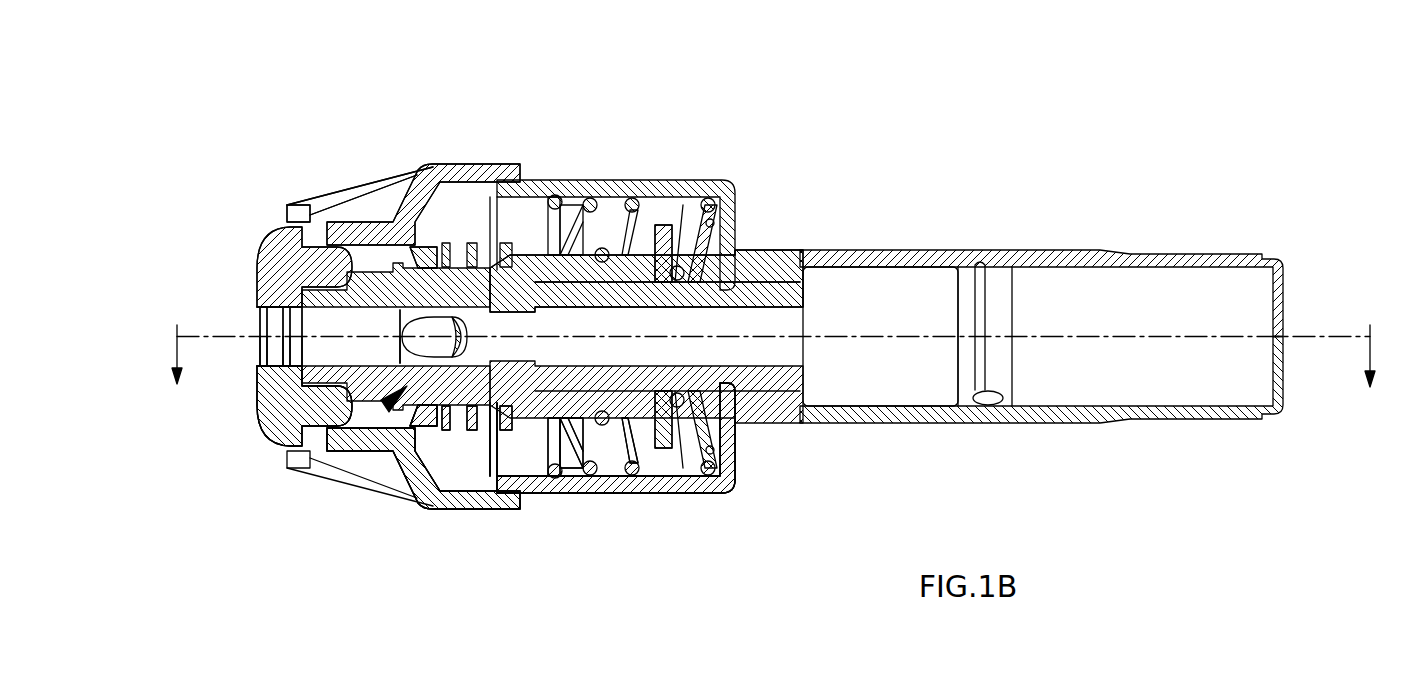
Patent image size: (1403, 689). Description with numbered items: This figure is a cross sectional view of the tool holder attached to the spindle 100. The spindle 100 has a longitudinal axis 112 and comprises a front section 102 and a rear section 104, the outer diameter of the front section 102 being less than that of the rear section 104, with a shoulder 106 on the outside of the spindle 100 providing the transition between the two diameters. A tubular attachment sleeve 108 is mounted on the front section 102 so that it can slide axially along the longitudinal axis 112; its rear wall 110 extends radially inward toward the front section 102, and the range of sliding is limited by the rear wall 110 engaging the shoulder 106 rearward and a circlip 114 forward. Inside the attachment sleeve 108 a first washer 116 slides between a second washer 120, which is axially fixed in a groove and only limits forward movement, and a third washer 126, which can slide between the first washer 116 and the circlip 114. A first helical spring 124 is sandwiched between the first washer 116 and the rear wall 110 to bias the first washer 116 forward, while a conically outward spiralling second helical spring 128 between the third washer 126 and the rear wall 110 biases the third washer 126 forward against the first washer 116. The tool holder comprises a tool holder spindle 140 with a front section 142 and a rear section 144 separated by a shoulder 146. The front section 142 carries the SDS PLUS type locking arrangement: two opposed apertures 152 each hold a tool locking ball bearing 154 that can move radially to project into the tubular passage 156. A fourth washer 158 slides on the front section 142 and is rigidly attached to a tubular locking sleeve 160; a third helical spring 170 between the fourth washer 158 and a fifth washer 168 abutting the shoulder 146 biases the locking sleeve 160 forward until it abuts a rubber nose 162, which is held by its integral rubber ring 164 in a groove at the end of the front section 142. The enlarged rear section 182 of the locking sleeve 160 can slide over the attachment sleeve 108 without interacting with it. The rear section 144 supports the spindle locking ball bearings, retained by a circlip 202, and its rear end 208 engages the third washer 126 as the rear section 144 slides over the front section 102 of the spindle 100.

The spindle 100 is at (953, 203).
The front section 102 is at (633, 380).
The rear section 104 is at (860, 253).
The shoulder 106 is at (737, 423).
The attachment sleeve 108 is at (662, 188).
The rear wall 110 is at (727, 243).
The longitudinal axis 112 is at (178, 334).
The circlip 114 is at (680, 225).
The first washer 116 is at (570, 227).
The second washer 120 is at (545, 497).
The first helical spring 124 is at (605, 250).
The third washer 126 is at (680, 445).
The second helical spring 128 is at (713, 430).
The tool holder spindle 140 is at (385, 415).
The front section 142 is at (360, 207).
The rear section 144 is at (577, 405).
The shoulder 146 is at (497, 480).
The apertures 152 is at (280, 432).
The tool locking ball bearing 154 is at (405, 335).
The tubular passage 156 is at (323, 348).
The fourth washer 158 is at (390, 193).
The locking sleeve 160 is at (425, 483).
The rubber nose 162 is at (260, 270).
The rubber ring 164 is at (278, 277).
The fifth washer 168 is at (483, 440).
The third helical spring 170 is at (455, 205).
The rear section of the locking sleeve 182 is at (450, 164).
The circlip 202 is at (600, 197).
The rear end 208 is at (670, 283).